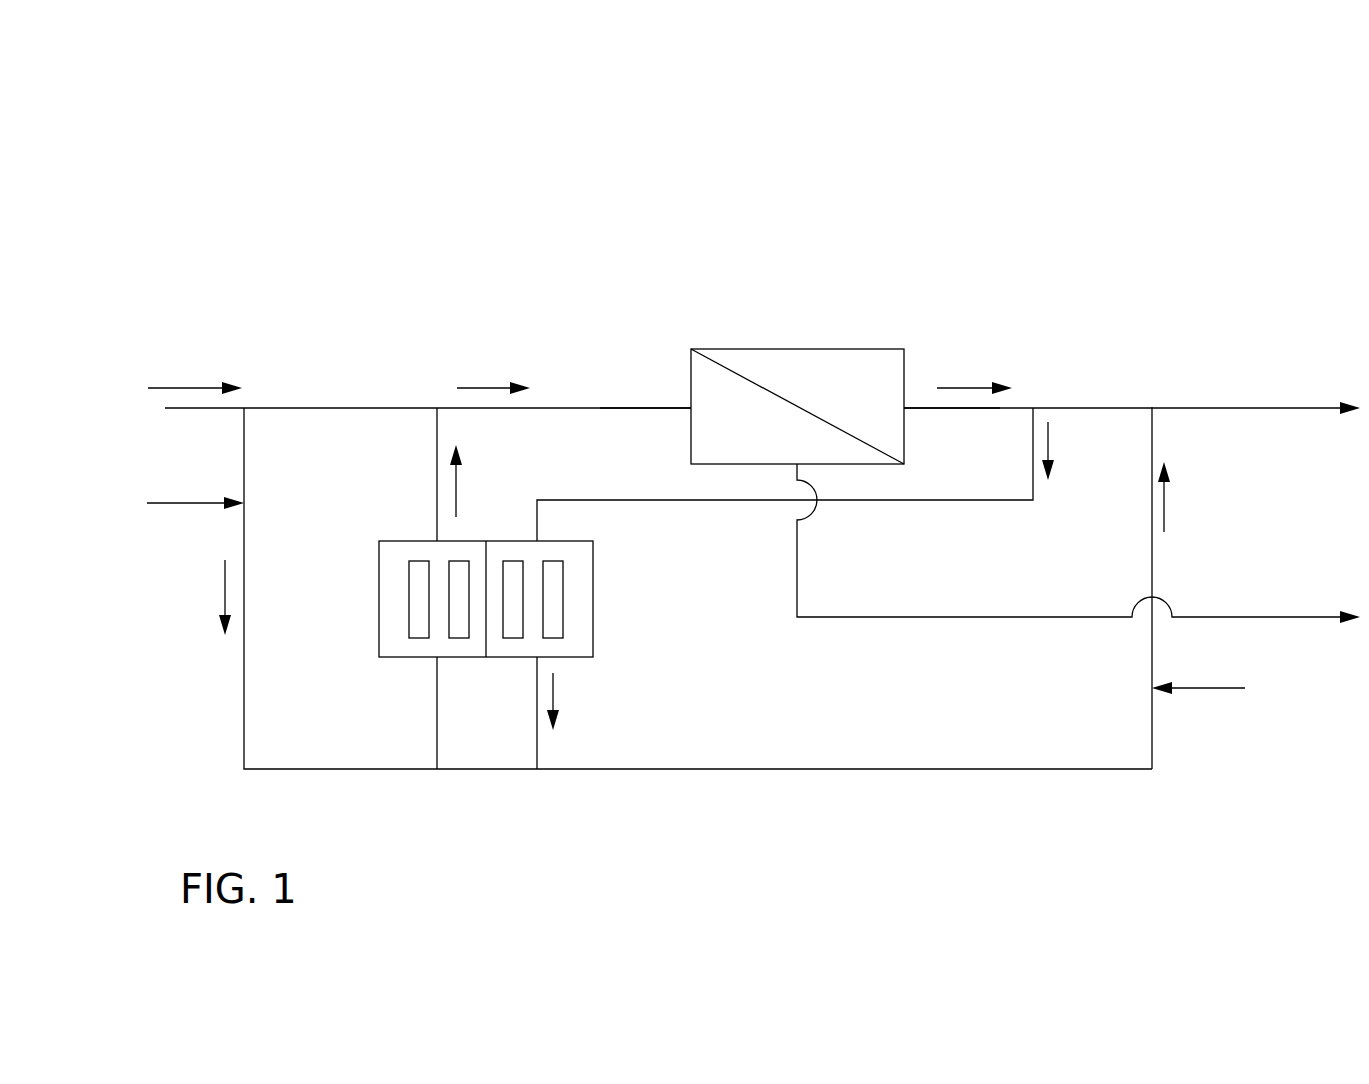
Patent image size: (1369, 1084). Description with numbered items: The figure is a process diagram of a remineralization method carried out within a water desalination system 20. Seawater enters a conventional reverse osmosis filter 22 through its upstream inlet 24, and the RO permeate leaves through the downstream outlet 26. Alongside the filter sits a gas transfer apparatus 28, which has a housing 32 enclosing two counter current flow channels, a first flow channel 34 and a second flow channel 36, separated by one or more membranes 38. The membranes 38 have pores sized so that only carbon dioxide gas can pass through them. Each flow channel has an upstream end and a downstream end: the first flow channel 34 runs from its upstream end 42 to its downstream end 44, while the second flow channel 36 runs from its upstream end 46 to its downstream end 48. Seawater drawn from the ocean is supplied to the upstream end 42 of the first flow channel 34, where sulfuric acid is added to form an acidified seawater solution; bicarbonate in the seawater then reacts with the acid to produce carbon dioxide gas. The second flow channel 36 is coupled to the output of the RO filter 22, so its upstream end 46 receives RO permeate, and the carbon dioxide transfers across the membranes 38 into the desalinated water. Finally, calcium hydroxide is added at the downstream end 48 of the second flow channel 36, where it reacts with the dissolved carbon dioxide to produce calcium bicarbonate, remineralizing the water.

The water desalination system 20 is at (977, 226).
The reverse osmosis filter 22 is at (778, 349).
The upstream inlet 24 is at (691, 405).
The downstream outlet 26 is at (907, 402).
The transfer apparatus 28 is at (593, 622).
The housing 32 is at (592, 541).
The first flow channel 34 is at (401, 657).
The second flow channel 36 is at (557, 657).
The membranes 38 is at (420, 566).
The upstream end of first flow channel 42 is at (357, 770).
The downstream end of first flow channel 44 is at (437, 446).
The upstream end of second flow channel 46 is at (572, 498).
The downstream end of second flow channel 48 is at (538, 751).